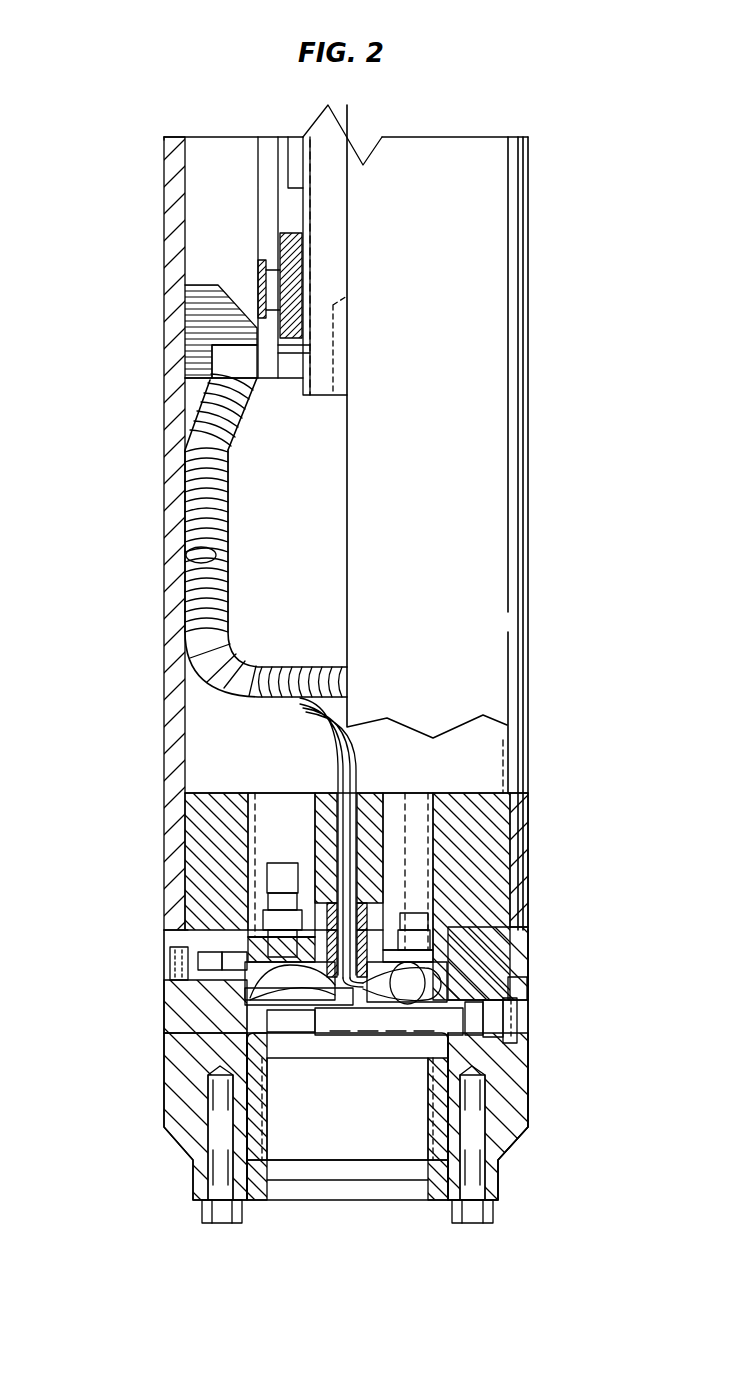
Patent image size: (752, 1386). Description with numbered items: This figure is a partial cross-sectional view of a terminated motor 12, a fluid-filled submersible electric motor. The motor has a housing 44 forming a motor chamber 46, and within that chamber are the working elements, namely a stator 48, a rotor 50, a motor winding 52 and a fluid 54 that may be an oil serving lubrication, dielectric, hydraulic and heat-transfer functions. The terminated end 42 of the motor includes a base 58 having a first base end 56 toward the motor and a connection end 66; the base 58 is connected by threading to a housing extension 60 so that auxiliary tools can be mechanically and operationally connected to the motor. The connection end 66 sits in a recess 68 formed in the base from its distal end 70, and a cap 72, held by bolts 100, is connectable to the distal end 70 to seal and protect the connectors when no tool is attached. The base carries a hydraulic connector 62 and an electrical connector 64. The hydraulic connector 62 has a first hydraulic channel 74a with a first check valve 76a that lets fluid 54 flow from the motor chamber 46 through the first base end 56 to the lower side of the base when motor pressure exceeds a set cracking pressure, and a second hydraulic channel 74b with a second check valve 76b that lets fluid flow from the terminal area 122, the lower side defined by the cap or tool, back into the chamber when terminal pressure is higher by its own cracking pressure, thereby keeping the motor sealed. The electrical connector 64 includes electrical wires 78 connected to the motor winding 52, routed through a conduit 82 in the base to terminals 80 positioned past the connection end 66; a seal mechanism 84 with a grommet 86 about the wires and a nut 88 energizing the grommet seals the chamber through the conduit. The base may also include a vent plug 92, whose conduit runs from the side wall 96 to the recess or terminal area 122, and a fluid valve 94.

The terminated motor 12 is at (552, 258).
The terminated end 42 is at (552, 684).
The housing 44 is at (530, 337).
The motor chamber 46 is at (388, 421).
The stator 48 is at (200, 312).
The rotor 50 is at (287, 211).
The motor winding 52 is at (205, 592).
The fluid 54 is at (278, 533).
The first base end 56 is at (478, 790).
The base 58 is at (166, 1118).
The housing extension 60 is at (164, 870).
The hydraulic connector 62 is at (140, 660).
The electrical connector 64 is at (552, 858).
The connection end 66 is at (447, 980).
The recess 68 is at (245, 1040).
The distal end 70 is at (500, 1158).
The cap 72 is at (198, 1190).
The first hydraulic channel 74a is at (268, 822).
The second hydraulic channel 74b is at (420, 828).
The first check valve 76a is at (277, 873).
The second check valve 76b is at (422, 922).
The electrical wires 78 is at (430, 1000).
The terminals 80 is at (440, 1025).
The conduit 82 is at (330, 786).
The seal mechanism 84 is at (400, 943).
The grommet 86 is at (323, 912).
The nut 88 is at (330, 955).
The vent plug 92 is at (167, 960).
The fluid valve 94 is at (497, 1017).
The side wall 96 is at (166, 1075).
The bolts 100 is at (493, 1218).
The terminal area 122 is at (250, 1032).